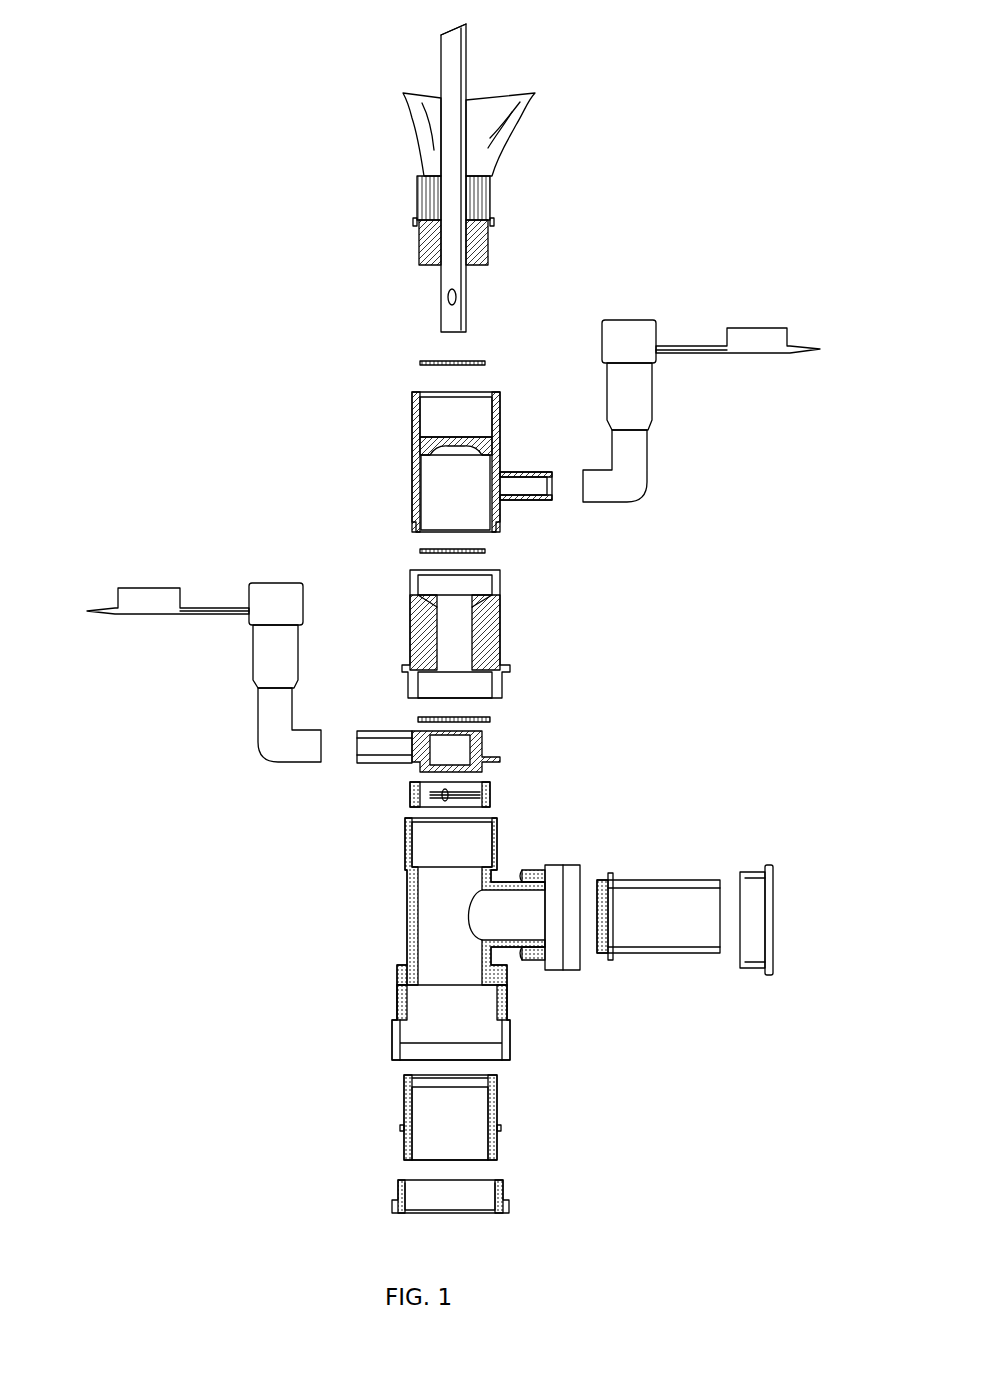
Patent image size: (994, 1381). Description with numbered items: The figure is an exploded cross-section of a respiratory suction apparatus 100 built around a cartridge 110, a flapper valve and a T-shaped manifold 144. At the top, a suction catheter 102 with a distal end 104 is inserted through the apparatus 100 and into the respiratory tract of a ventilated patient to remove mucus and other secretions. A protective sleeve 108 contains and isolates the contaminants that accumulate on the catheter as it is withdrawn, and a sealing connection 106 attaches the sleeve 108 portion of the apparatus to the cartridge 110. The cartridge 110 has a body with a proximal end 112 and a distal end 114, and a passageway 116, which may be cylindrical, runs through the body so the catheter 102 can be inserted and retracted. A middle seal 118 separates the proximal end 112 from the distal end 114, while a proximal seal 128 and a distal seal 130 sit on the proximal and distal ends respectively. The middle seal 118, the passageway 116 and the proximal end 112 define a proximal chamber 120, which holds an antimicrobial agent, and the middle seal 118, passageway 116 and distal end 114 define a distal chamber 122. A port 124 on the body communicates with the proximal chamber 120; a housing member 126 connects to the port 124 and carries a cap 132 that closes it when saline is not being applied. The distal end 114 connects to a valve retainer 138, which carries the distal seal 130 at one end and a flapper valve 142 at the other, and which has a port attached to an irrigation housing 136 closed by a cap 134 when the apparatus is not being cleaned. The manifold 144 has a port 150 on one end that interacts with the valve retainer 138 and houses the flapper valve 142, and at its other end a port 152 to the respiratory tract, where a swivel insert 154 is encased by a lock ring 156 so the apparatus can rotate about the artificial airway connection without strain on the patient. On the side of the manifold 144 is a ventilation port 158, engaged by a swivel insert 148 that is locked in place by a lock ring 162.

The respiratory suction apparatus 100 is at (205, 305).
The suction catheter 102 is at (440, 62).
The distal end of suction catheter 104 is at (440, 306).
The sealing connection 106 is at (490, 200).
The protective sleeve 108 is at (532, 110).
The cartridge 110 is at (715, 676).
The proximal end of cartridge 112 is at (414, 413).
The distal end of cartridge 114 is at (500, 630).
The passageway 116 is at (445, 495).
The middle seal 118 is at (420, 551).
The proximal chamber 120 is at (470, 530).
The distal chamber 122 is at (452, 660).
The port 124 is at (530, 472).
The housing member 126 is at (650, 405).
The proximal seal 128 is at (470, 353).
The distal seal 130 is at (440, 718).
The cap 132 is at (757, 327).
The cap 134 is at (148, 600).
The irrigation housing 136 is at (268, 723).
The valve retainer 138 is at (408, 750).
The flapper valve 142 is at (493, 790).
The T-shaped manifold 144 is at (392, 948).
The swivel insert 148 is at (643, 885).
The port 150 is at (405, 845).
The port 152 is at (390, 1043).
The swivel insert 154 is at (404, 1112).
The lock ring 156 is at (398, 1196).
The ventilation port 158 is at (508, 952).
The lock ring 162 is at (750, 970).